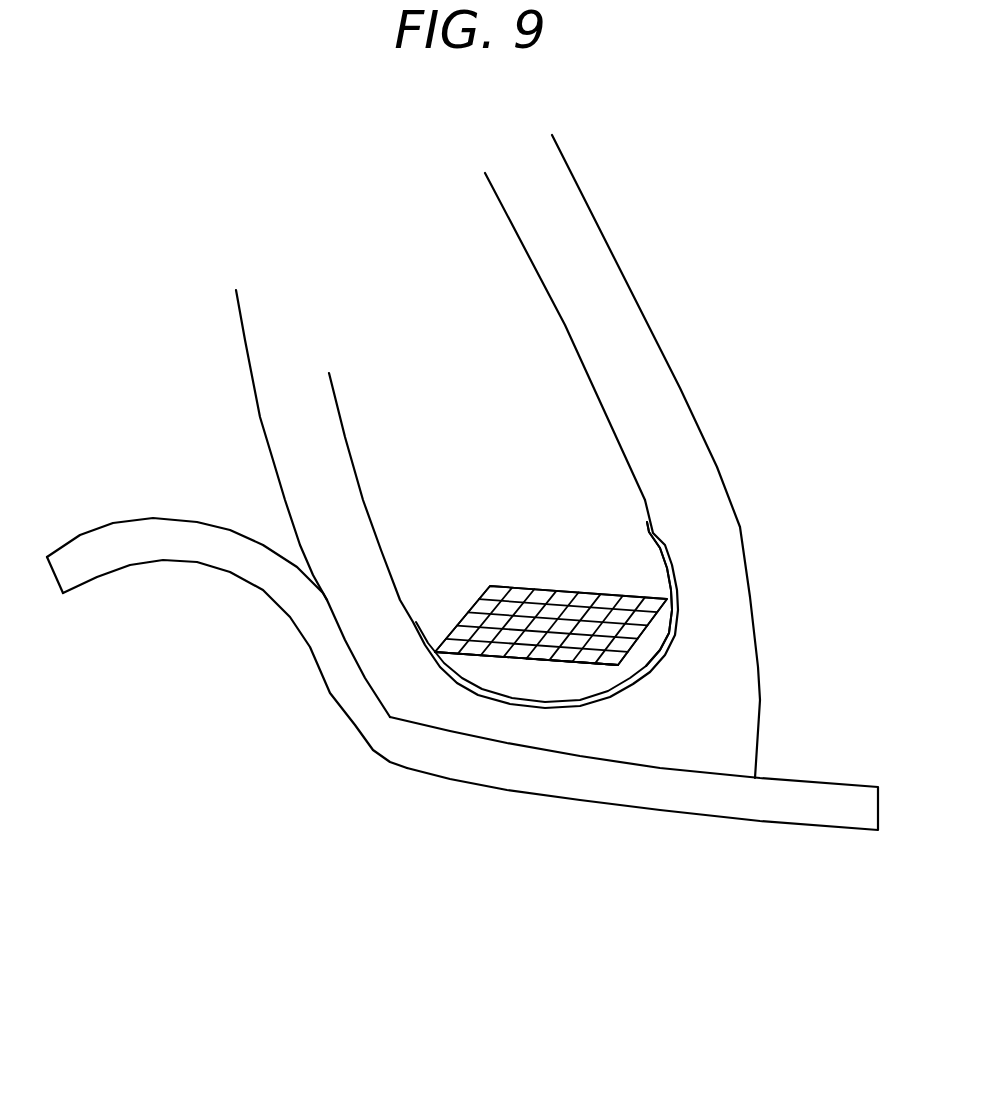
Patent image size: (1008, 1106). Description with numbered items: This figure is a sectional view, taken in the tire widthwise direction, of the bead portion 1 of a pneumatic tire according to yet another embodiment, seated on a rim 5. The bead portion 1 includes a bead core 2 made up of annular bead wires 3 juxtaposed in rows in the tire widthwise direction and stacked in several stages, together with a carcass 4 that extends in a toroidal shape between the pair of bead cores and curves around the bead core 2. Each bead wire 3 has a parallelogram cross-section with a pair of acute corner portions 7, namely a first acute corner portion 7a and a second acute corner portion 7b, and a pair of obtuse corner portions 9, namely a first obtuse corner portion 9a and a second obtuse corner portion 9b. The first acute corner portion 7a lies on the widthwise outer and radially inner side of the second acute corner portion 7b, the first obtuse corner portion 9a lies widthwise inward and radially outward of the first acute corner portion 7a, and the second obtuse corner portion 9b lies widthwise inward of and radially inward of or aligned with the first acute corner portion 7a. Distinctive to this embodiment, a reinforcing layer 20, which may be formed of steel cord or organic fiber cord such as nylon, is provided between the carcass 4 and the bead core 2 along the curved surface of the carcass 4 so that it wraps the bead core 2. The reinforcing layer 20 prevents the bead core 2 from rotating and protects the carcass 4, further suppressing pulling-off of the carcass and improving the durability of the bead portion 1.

The bead portion 1 is at (613, 188).
The bead core 2 is at (521, 586).
The bead wire 3 is at (611, 694).
The carcass 4 is at (565, 325).
The rim 5 is at (227, 643).
The acute corner portion 7 is at (609, 521).
The first acute corner portion 7a is at (582, 547).
The second acute corner portion 7b is at (708, 393).
The obtuse corner portion 9 is at (531, 793).
The first obtuse corner portion 9a is at (526, 768).
The second obtuse corner portion 9b is at (533, 880).
The reinforcing layer 20 is at (503, 615).